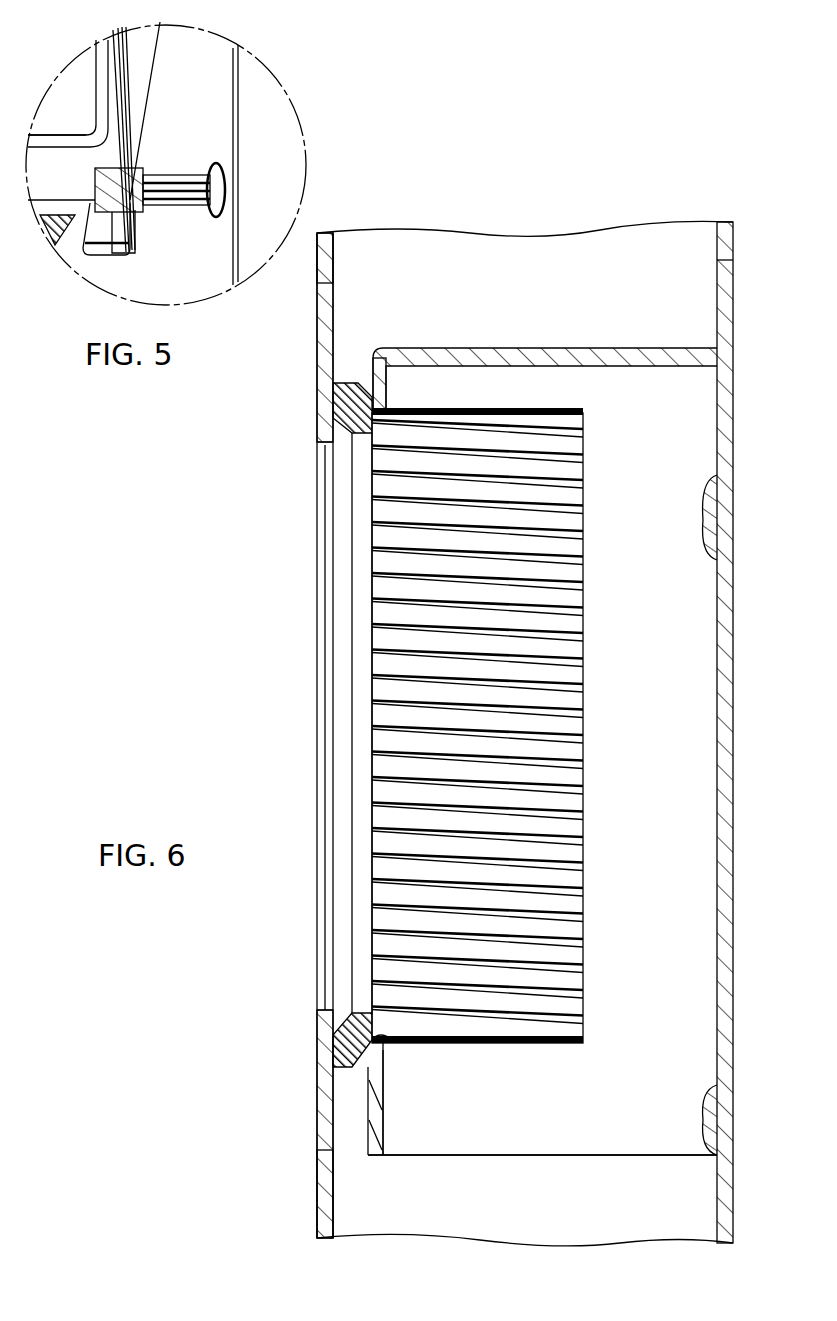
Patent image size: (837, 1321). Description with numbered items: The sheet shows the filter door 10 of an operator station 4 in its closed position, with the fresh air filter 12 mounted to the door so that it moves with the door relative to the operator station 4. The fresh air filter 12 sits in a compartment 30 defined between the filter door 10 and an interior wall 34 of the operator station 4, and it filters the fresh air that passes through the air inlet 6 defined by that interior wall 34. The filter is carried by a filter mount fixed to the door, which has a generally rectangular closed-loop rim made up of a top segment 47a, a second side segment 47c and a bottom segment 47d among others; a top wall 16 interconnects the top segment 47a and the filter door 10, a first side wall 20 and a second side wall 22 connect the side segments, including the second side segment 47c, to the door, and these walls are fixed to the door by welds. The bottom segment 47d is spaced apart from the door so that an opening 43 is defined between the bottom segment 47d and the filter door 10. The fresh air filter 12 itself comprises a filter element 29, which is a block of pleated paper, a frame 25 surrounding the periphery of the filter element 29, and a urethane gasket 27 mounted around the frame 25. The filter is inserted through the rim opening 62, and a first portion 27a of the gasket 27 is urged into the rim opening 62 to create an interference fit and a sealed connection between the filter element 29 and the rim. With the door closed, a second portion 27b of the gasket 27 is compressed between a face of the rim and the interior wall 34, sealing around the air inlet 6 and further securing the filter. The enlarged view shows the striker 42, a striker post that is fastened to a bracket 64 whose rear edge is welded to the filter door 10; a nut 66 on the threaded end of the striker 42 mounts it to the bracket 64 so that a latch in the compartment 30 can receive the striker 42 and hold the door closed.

In FIG. 6, the operator station 4 is at (308, 372).
In FIG. 6, the air inlet 6 is at (333, 445).
In FIG. 6, the filter door 10 is at (748, 482).
In FIG. 6, the fresh air filter 12 is at (298, 713).
In FIG. 6, the top wall 16 is at (575, 348).
In FIG. 6, the first side wall 20 is at (663, 537).
In FIG. 5, the second side wall 22 is at (138, 60).
In FIG. 6, the frame 25 is at (558, 410).
In FIG. 6, the gasket 27 is at (333, 1047).
In FIG. 6, the first portion of the gasket 27a is at (395, 411).
In FIG. 6, the second portion of the gasket 27b is at (355, 382).
In FIG. 6, the filter element 29 is at (388, 970).
In FIG. 6, the compartment 30 is at (676, 1208).
In FIG. 6, the interior wall 34 is at (312, 1190).
In FIG. 5, the striker 42 is at (182, 168).
In FIG. 6, the opening 43 is at (530, 1165).
In FIG. 6, the top segment of the rim 47a is at (386, 388).
In FIG. 5, the second side segment of the rim 47c is at (78, 75).
In FIG. 5, the bottom segment of the rim 47d is at (58, 150).
In FIG. 6, the bottom segment of the rim 47d is at (383, 1140).
In FIG. 6, the rim opening 62 is at (385, 1040).
In FIG. 5, the bracket 64 is at (135, 245).
In FIG. 5, the nut 66 is at (120, 245).